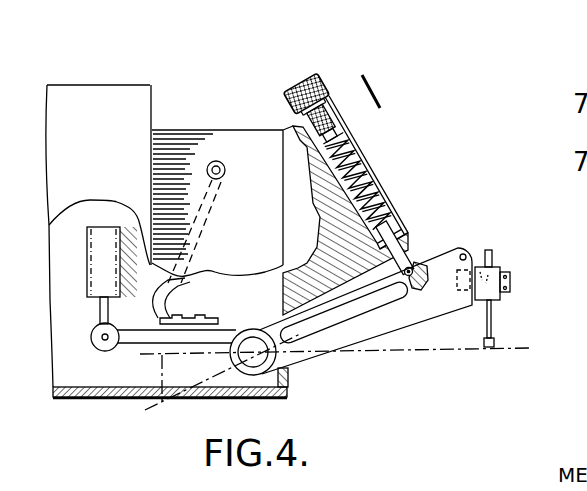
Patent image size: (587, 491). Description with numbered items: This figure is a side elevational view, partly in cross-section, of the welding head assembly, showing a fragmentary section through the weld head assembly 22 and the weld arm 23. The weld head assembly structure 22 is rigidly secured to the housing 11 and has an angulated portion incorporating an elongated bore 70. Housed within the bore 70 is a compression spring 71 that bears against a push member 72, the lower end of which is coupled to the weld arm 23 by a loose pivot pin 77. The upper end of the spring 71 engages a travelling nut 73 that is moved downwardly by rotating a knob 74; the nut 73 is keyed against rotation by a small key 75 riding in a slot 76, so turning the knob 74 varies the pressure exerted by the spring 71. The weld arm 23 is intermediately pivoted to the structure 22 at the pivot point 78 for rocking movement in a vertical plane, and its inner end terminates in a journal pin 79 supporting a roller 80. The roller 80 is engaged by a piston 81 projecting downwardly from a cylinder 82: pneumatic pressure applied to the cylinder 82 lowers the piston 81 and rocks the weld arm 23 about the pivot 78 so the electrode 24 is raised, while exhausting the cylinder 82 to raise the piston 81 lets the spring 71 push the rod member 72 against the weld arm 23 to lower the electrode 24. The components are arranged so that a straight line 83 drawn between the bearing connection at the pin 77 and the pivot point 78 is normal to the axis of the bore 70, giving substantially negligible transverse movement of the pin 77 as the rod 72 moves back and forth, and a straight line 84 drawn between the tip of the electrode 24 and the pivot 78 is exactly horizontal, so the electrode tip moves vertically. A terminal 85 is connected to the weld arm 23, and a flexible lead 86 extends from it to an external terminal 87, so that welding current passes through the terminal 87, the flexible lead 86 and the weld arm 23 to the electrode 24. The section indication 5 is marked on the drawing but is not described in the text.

The section line / viewing direction arrow 5 is at (382, 81).
The housing 11 is at (153, 88).
The weld head assembly 22 is at (290, 126).
The weld arm 23 is at (458, 250).
The electrode 24 is at (498, 321).
The elongated bore 70 is at (367, 160).
The compression spring 71 is at (392, 187).
The push member 72 is at (396, 253).
The travelling nut 73 is at (300, 160).
The knob 74 is at (292, 90).
The small key 75 is at (360, 73).
The slot 76 is at (353, 125).
The loose pivot pin 77 is at (412, 292).
The pivot point 78 is at (290, 383).
The journal pin 79 is at (102, 347).
The roller 80 is at (97, 338).
The piston 81 is at (100, 307).
The cylinder 82 is at (90, 253).
The straight line 83 is at (232, 398).
The straight line 84 is at (160, 407).
The terminal 85 is at (208, 318).
The flexible lead 86 is at (200, 278).
The external terminal 87 is at (208, 178).